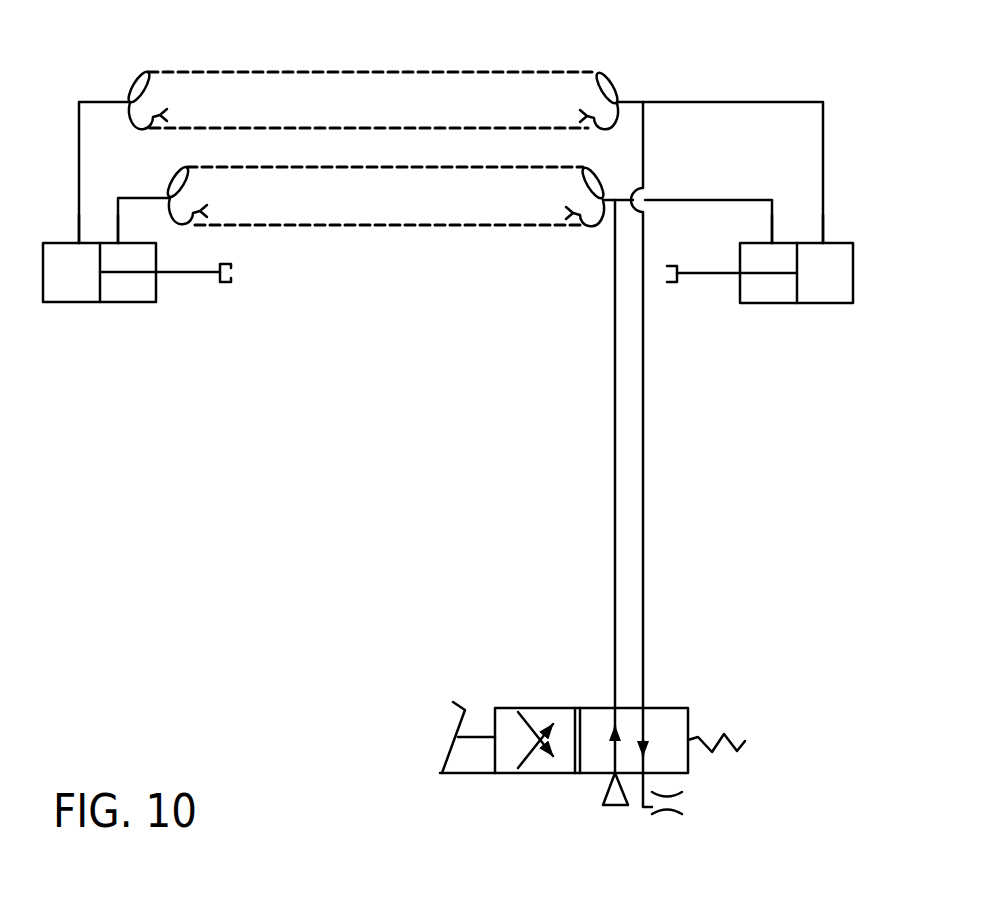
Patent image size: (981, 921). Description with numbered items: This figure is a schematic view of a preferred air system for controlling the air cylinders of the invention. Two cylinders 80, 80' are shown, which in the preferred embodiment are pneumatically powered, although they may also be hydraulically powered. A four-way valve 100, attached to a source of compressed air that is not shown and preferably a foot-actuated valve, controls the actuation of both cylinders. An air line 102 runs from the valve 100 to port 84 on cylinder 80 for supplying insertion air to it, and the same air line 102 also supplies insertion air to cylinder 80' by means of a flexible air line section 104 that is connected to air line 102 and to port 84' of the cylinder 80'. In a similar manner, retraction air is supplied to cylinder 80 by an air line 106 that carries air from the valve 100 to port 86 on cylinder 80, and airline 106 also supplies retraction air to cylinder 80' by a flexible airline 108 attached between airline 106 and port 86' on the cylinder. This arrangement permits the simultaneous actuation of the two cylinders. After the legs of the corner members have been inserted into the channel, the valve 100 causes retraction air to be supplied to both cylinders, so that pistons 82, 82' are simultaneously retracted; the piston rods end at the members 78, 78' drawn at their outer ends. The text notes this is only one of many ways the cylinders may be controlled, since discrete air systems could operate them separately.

The brake actuating member 78 is at (690, 321).
The brake actuating member (second) 78' is at (258, 298).
The cylinder 80 is at (796, 314).
The cylinder 80' is at (103, 320).
The piston 82 is at (711, 240).
The piston 82' is at (188, 322).
The port 84 is at (842, 200).
The port 84' is at (59, 207).
The port 86 is at (780, 200).
The port 86' is at (113, 195).
The four-way valve 100 is at (672, 712).
The air line 102 is at (644, 556).
The flexible air line section 104 is at (487, 72).
The air line 106 is at (614, 560).
The flexible airline 108 is at (385, 225).